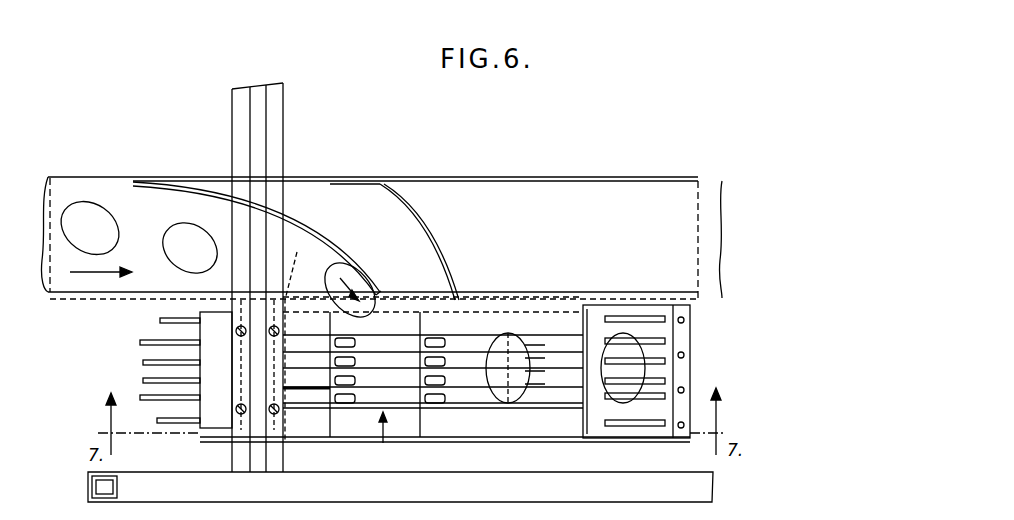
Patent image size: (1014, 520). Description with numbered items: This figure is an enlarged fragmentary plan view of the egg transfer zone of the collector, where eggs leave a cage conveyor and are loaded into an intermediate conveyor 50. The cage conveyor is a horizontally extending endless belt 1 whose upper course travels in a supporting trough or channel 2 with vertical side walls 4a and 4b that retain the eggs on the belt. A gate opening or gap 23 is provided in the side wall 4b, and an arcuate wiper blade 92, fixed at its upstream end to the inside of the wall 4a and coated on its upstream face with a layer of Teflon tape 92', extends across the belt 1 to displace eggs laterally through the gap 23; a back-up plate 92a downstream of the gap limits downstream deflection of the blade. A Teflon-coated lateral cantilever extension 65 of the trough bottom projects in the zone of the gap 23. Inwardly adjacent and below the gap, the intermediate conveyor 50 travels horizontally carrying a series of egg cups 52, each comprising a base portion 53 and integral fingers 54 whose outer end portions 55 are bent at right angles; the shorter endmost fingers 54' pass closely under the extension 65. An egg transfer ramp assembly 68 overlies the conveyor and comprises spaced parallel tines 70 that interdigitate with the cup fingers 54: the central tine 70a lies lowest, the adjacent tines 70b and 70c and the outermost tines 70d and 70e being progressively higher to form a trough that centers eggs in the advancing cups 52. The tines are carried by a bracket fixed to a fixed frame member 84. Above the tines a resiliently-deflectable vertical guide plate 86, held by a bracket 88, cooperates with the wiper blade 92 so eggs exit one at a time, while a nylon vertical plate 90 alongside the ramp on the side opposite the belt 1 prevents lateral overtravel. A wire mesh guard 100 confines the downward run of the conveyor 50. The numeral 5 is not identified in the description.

The endless belt 1 is at (122, 186).
The supporting trough or channel 2 is at (557, 177).
The side wall 4a is at (447, 177).
The side wall 4b is at (690, 296).
The support member 5 is at (88, 480).
The gate opening or gap 23 is at (298, 336).
The intermediate conveyor 50 is at (212, 418).
The egg cup 52 is at (170, 300).
The base portion 53 is at (200, 347).
The finger 54 is at (404, 335).
The endmost finger 54' is at (384, 355).
The outer end portion 55 is at (540, 376).
The lateral cantilever extension 65 is at (398, 298).
The egg transfer ramp assembly 68 is at (383, 445).
The tine 70 is at (310, 335).
The central tine 70a is at (468, 385).
The tine 70b is at (478, 395).
The tine 70c is at (492, 300).
The outermost tine 70d is at (393, 410).
The outermost tine 70e is at (500, 300).
The fixed member 84 is at (275, 150).
The vertical guide plate 86 is at (320, 380).
The bracket 88 is at (300, 389).
The vertical plate 90 is at (318, 430).
The arcuate wiper blade 92 is at (257, 238).
The Teflon tape layer 92' is at (373, 241).
The back-up plate 92a is at (433, 240).
The wire mesh guard 100 is at (400, 487).